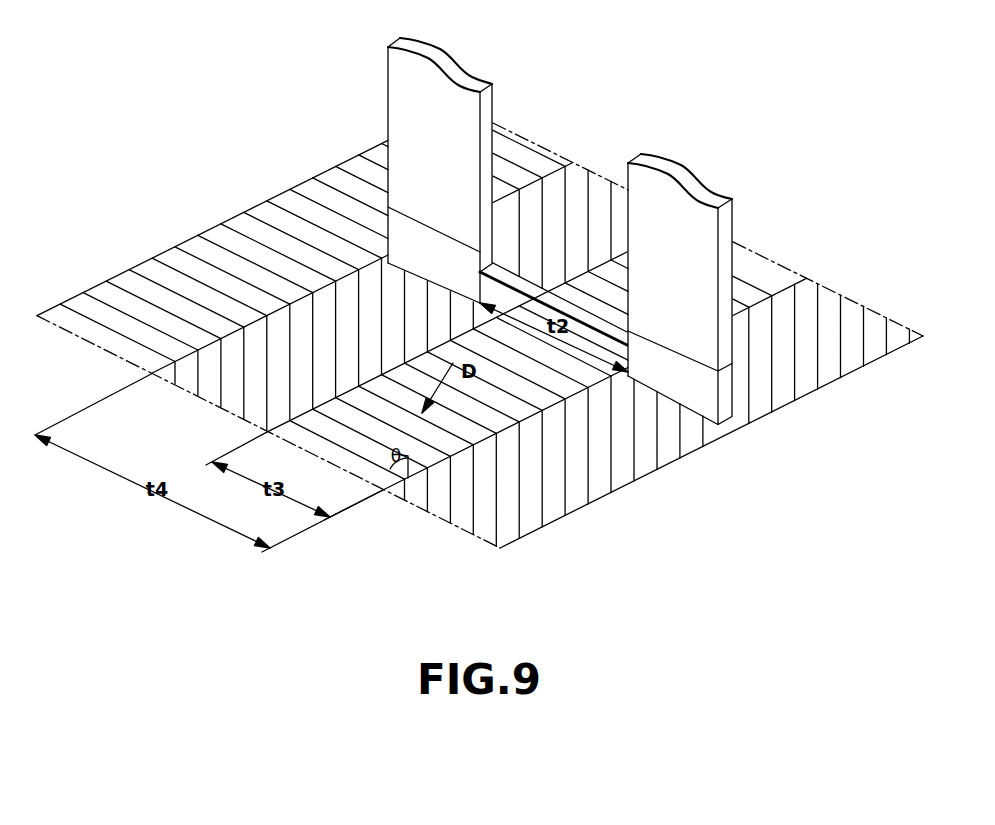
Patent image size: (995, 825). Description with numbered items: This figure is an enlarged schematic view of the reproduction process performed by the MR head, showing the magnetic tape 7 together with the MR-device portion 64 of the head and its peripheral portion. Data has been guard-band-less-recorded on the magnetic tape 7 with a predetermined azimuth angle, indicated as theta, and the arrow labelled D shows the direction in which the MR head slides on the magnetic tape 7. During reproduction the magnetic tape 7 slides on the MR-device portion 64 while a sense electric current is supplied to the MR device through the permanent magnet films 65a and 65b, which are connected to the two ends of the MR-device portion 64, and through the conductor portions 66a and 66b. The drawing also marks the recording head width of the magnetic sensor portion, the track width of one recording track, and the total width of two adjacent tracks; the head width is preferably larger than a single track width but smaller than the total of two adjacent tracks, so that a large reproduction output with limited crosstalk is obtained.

The magnetic tape 7 is at (580, 505).
The MR-device portion 64 is at (528, 310).
The permanent magnet film 65a is at (408, 240).
The permanent magnet film 65b is at (688, 395).
The conductor portion 66a is at (407, 105).
The conductor portion 66b is at (700, 265).